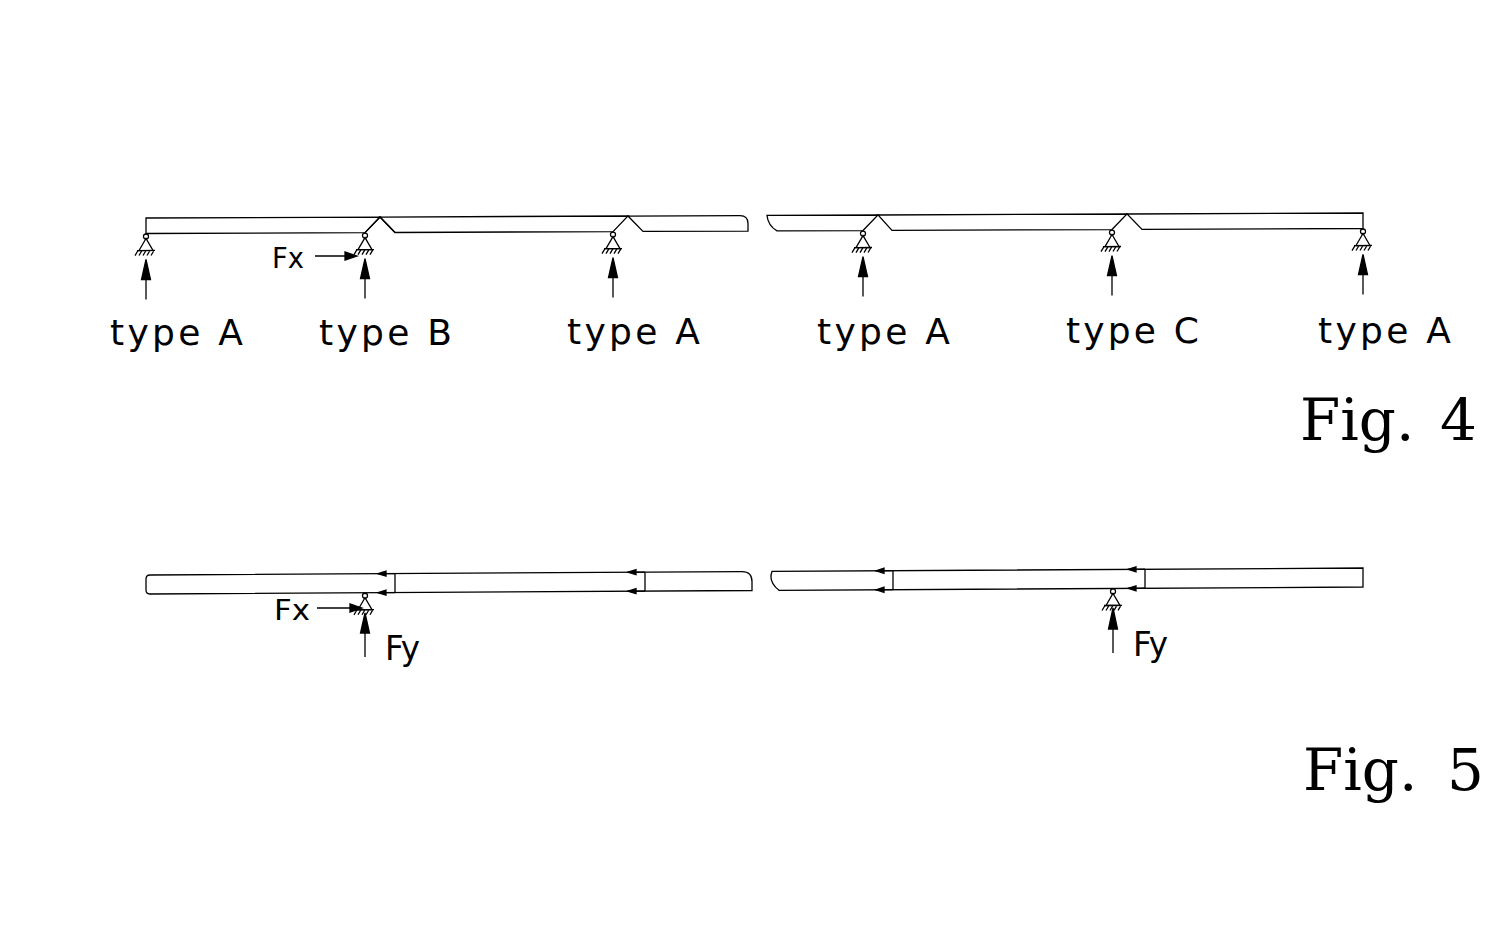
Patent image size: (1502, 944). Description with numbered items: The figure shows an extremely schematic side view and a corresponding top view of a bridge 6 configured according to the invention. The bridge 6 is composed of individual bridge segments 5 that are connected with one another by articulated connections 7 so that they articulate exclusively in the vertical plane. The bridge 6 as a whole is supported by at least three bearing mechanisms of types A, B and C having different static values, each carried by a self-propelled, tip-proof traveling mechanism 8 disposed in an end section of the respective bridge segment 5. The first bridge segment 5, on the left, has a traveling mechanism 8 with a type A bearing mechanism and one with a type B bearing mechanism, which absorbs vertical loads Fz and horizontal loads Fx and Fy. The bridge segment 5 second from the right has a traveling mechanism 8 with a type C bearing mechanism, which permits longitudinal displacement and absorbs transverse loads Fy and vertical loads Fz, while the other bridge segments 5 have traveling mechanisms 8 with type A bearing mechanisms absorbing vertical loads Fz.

In FIG. 4, the bridge segment 5 is at (217, 222).
In FIG. 5, the bridge segment 5 is at (226, 583).
In FIG. 4, the bridge 6 is at (652, 167).
In FIG. 5, the bridge 6 is at (601, 521).
In FIG. 4, the articulated connection 7 is at (376, 190).
In FIG. 5, the articulated connection 7 is at (383, 545).
In FIG. 4, the traveling mechanism 8 is at (183, 268).